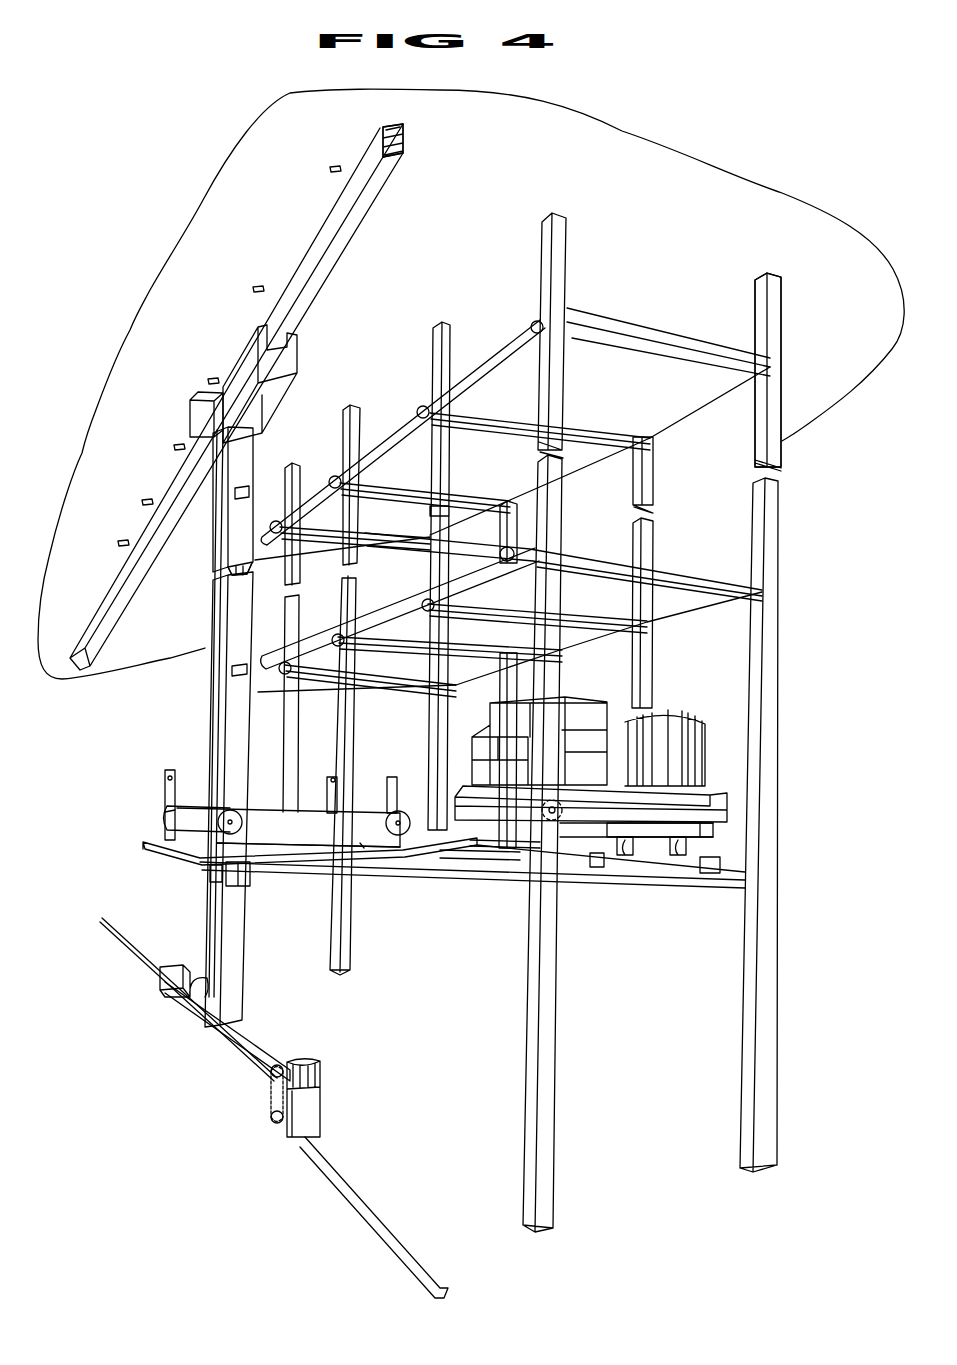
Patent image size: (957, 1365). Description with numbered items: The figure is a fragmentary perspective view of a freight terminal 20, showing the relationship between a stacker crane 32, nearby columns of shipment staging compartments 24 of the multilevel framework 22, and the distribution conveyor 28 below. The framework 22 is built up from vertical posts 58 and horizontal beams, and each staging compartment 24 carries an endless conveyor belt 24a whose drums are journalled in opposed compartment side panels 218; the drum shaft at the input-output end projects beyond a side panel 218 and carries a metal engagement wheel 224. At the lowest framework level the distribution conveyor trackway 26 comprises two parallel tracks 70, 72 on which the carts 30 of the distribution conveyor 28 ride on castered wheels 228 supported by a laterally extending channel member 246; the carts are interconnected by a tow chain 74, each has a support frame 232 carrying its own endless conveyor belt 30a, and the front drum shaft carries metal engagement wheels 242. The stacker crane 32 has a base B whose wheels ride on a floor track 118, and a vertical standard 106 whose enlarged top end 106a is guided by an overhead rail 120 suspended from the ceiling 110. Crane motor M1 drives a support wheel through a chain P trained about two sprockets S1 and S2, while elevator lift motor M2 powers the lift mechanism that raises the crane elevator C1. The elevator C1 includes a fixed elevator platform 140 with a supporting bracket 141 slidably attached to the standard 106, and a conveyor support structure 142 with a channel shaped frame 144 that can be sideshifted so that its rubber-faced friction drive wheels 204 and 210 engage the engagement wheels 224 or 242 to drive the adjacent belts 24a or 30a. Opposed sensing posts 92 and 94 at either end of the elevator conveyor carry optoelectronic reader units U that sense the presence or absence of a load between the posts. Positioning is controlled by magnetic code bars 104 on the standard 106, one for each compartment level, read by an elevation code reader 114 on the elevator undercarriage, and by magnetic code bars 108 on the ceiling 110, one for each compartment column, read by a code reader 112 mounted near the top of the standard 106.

The freight terminal 20 is at (147, 222).
The multilevel framework 22 is at (793, 455).
The shipment staging compartment 24 is at (541, 493).
The endless conveyor belt 24a is at (635, 402).
The distribution conveyor trackway 26 is at (742, 866).
The distribution conveyor 28 is at (750, 810).
The cart 30 is at (752, 825).
The endless conveyor belt 30a is at (166, 820).
The stacker crane 32 is at (200, 694).
The vertical post 58 is at (350, 933).
The track 70 is at (466, 852).
The track 72 is at (709, 874).
The tow chain 74 is at (520, 845).
The sensing post 92 is at (165, 790).
The sensing post 94 is at (340, 786).
The magnetic code bar 104 is at (242, 488).
The crane standard 106 is at (226, 586).
The enlarged top end 106a is at (292, 356).
The magnetic code bar 108 is at (328, 169).
The ceiling 110 is at (451, 231).
The code reader 112 is at (190, 411).
The elevation code reader 114 is at (242, 884).
The floor track 118 is at (325, 1161).
The overhead rail 120 is at (405, 140).
The elevator platform 140 is at (185, 862).
The supporting bracket 141 is at (208, 874).
The conveyor support structure 142 is at (362, 845).
The channel shaped frame 144 is at (309, 857).
The friction drive wheel 204 is at (243, 822).
The friction drive wheel 210 is at (386, 825).
The compartment side panel 218 is at (660, 335).
The engagement wheel 224 is at (537, 333).
The castered wheel 228 is at (680, 856).
The support frame 232 is at (742, 794).
The engagement wheel 242 is at (564, 810).
The channel member 246 is at (730, 836).
The optoelectronic reader unit U is at (176, 775).
The base B is at (220, 1050).
The crane elevator C1 is at (267, 831).
The crane motor M1 is at (300, 1060).
The elevator lift motor M2 is at (185, 998).
The chain P is at (272, 1098).
The sprocket S1 is at (270, 1077).
The sprocket S2 is at (270, 1118).